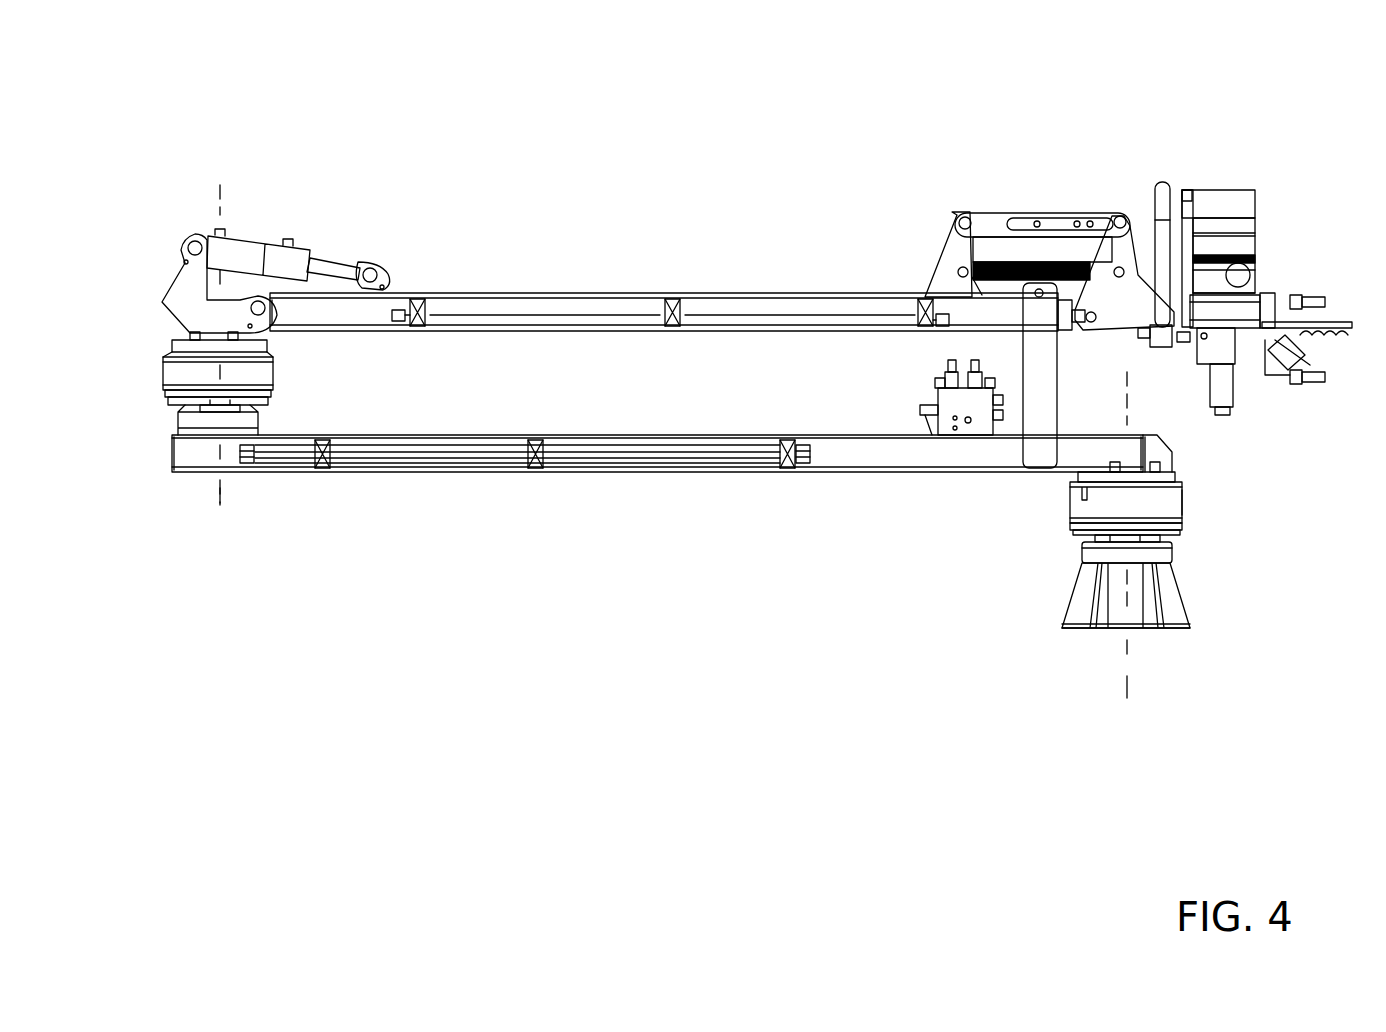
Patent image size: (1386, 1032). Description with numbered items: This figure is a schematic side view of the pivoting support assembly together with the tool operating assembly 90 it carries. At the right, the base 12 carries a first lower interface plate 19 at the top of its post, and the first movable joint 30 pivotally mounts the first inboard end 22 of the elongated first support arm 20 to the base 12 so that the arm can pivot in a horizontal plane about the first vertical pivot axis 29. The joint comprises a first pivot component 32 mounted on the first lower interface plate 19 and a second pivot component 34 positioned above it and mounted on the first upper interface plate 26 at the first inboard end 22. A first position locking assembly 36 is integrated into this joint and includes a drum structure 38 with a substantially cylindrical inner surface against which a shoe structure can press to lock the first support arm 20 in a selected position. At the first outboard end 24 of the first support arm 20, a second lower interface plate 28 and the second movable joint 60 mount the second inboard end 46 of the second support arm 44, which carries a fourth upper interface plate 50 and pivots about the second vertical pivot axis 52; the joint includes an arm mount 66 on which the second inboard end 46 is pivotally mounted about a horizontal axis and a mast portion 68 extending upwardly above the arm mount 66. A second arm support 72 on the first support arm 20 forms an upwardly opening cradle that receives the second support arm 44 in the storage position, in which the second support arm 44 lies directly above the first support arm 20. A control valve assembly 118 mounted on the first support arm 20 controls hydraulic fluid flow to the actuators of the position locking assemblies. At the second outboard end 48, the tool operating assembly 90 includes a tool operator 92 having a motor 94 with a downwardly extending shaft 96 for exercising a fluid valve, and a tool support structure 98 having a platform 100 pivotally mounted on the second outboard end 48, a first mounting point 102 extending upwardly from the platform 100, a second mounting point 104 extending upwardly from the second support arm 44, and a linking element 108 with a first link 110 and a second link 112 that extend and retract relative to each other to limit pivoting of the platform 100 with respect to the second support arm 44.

The base 12 is at (1052, 629).
The first lower interface plate 19 is at (1168, 552).
The first support arm 20 is at (845, 453).
The first inboard end 22 is at (1103, 433).
The first outboard end 24 is at (200, 452).
The first upper interface plate 26 is at (1122, 470).
The second lower interface plate 28 is at (246, 428).
The first vertical pivot axis 29 is at (1128, 687).
The first movable joint 30 is at (1146, 553).
The first pivot component 32 is at (1085, 548).
The second pivot component 34 is at (1085, 510).
The first position locking assembly 36 is at (1186, 471).
The drum structure 38 is at (1165, 515).
The second support arm 44 is at (588, 306).
The second inboard end 46 is at (266, 324).
The second outboard end 48 is at (1060, 325).
The fourth upper interface plate 50 is at (176, 344).
The second vertical pivot axis 52 is at (222, 495).
The second movable joint 60 is at (225, 448).
The arm mount 66 is at (253, 288).
The mast portion 68 is at (174, 283).
The second arm support 72 is at (1037, 348).
The tool operating assembly 90 is at (1128, 223).
The tool operator 92 is at (1266, 214).
The motor 94 is at (1215, 198).
The shaft 96 is at (1232, 395).
The tool support structure 98 is at (1135, 186).
The platform 100 is at (1222, 322).
The first mounting point 102 is at (1113, 250).
The second mounting point 104 is at (944, 253).
The linking element 108 is at (983, 225).
The first link 110 is at (997, 222).
The second link 112 is at (1042, 165).
The control valve assembly 118 is at (945, 410).